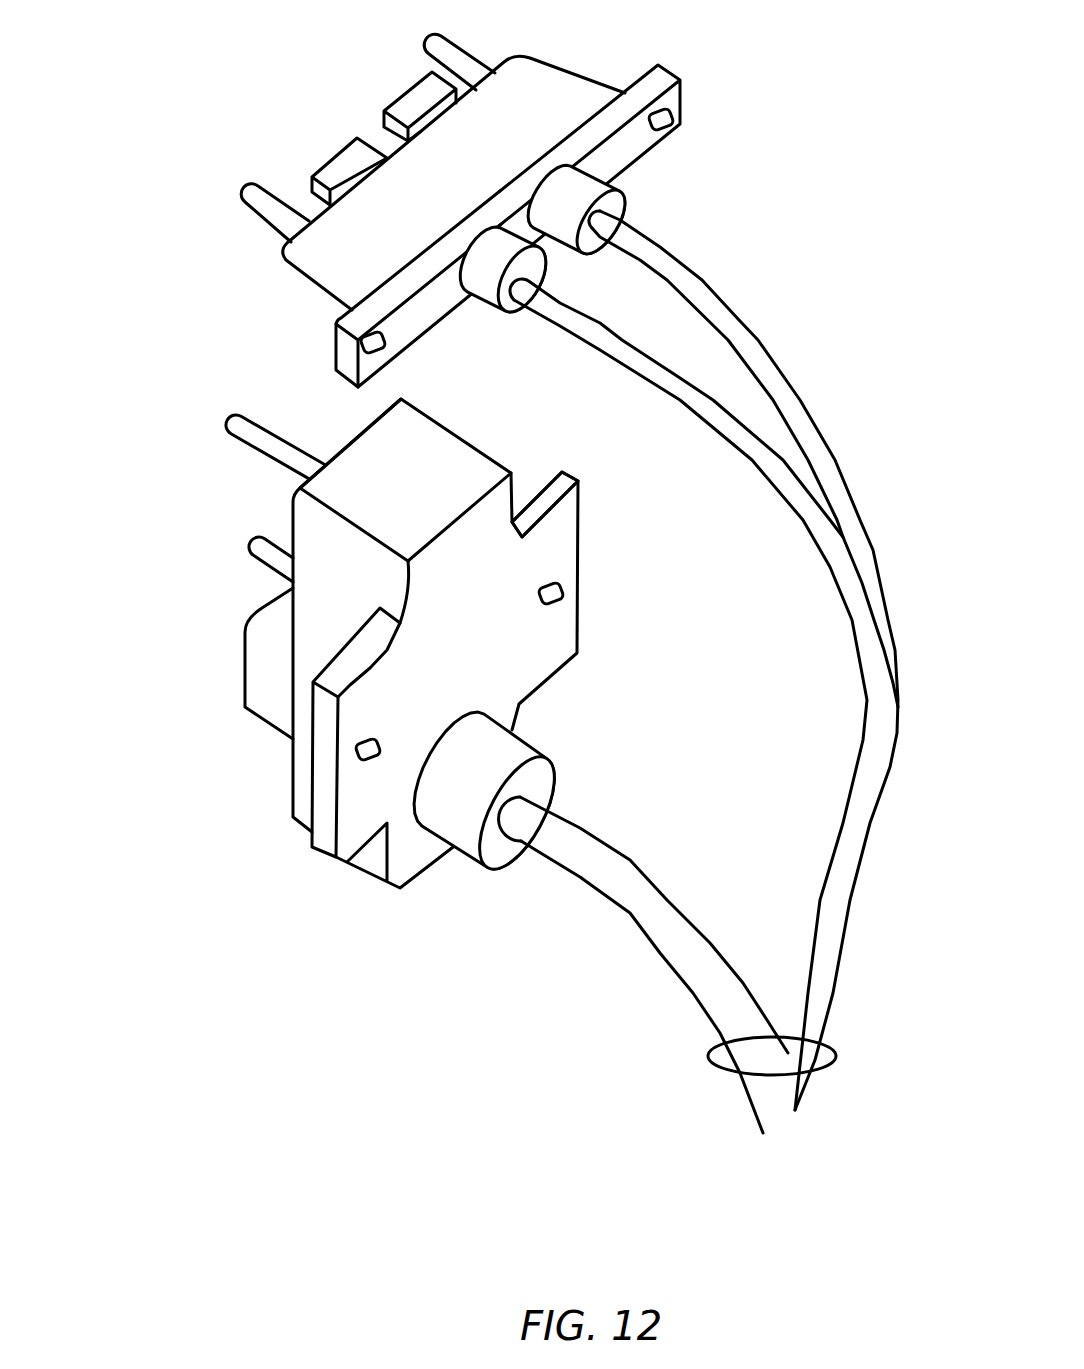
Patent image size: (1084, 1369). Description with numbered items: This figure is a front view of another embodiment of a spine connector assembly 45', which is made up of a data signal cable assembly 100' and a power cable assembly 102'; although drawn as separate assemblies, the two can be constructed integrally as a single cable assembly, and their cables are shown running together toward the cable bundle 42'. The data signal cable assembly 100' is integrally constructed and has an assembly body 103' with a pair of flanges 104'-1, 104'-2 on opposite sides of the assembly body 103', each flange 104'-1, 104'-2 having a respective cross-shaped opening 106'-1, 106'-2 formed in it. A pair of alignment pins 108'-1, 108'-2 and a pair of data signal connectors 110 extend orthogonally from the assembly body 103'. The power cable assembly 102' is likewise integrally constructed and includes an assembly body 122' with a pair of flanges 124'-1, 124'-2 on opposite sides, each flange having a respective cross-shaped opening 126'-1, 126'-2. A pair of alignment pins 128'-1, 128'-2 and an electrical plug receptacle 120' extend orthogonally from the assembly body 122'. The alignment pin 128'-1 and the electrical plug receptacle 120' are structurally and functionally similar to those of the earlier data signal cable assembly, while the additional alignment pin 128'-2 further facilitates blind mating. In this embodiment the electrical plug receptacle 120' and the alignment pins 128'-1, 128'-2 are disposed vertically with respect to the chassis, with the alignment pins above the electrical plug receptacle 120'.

The spine connector assembly 45' is at (727, 555).
The cable bundle ring 42' is at (807, 1033).
The data signal cable assembly 100' is at (434, 196).
The power cable assembly 102' is at (409, 763).
The assembly body 103' is at (454, 183).
The flange 104'-1 is at (580, 151).
The flange 104'-2 is at (341, 289).
The cross-shaped opening 106'-1 is at (715, 147).
The cross-shaped opening 106'-2 is at (450, 346).
The alignment pin 108'-1 is at (398, 47).
The alignment pin 108'-2 is at (218, 196).
The data signal connectors 110 is at (330, 160).
The electrical plug receptacle 120' is at (208, 655).
The assembly body 122' is at (435, 643).
The flange 124'-1 is at (515, 469).
The flange 124'-2 is at (283, 732).
The cross-shaped opening 126'-1 is at (623, 580).
The cross-shaped opening 126'-2 is at (434, 842).
The alignment pin 128'-1 is at (213, 436).
The alignment pin 128'-2 is at (201, 541).